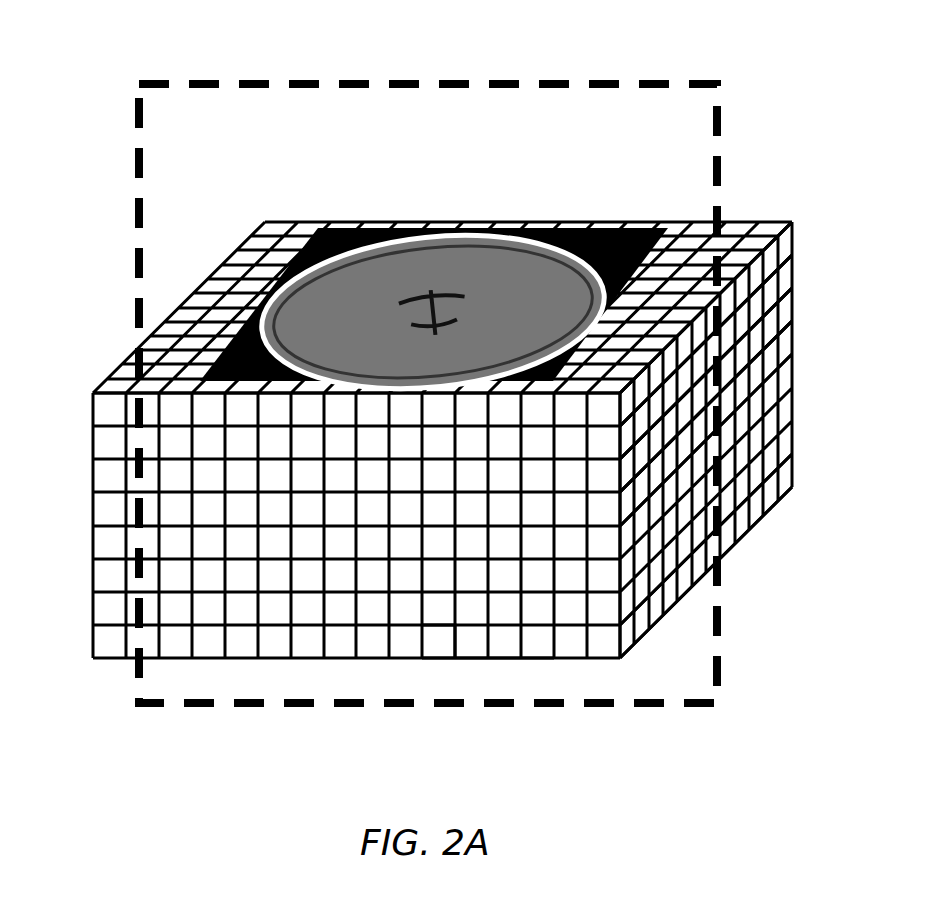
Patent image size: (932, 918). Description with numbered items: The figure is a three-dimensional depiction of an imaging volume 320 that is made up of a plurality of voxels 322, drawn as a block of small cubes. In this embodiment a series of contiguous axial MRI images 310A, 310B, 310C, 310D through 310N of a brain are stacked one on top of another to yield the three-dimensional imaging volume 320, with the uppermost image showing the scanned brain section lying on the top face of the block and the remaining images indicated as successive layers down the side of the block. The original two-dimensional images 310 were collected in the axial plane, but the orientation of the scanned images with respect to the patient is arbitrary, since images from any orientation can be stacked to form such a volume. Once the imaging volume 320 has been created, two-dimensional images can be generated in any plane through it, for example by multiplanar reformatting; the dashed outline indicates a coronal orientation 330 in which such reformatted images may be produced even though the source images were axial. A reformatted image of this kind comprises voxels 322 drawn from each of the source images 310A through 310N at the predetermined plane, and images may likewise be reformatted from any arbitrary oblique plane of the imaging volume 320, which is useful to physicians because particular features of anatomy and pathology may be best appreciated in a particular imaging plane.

The coronal orientation 330 is at (557, 82).
The imaging volume 320 is at (743, 212).
The original 2D images 310 is at (473, 223).
The axial MRI image 310A is at (795, 236).
The axial MRI image 310B is at (795, 276).
The axial MRI image 310C is at (795, 308).
The axial MRI image 310D is at (795, 336).
The axial MRI image 310N is at (795, 466).
The voxels 322 is at (440, 609).